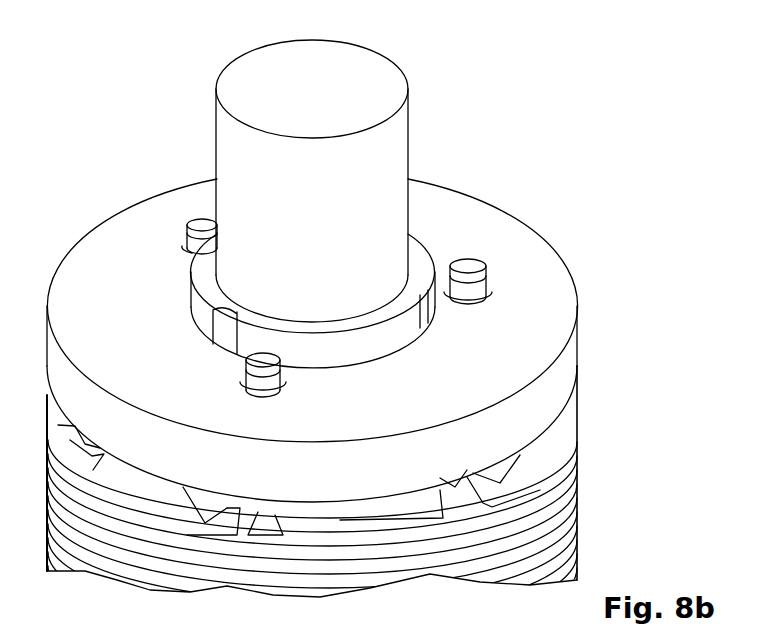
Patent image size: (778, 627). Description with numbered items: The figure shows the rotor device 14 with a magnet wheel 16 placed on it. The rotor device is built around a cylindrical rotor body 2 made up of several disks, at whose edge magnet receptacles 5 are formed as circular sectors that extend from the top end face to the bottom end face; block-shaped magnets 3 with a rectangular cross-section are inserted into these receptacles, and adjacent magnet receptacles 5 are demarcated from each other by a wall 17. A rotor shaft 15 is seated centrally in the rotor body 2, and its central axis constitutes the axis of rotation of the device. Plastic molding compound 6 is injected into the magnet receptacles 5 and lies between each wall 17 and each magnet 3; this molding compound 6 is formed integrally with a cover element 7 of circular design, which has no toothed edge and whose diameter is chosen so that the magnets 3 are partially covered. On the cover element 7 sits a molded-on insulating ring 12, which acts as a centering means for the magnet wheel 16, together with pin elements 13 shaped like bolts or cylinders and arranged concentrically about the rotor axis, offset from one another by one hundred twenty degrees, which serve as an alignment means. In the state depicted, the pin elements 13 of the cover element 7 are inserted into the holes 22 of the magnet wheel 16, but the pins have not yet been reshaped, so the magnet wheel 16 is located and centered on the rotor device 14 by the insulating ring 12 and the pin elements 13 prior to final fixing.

The rotor body 2 is at (572, 516).
The magnets 3 is at (342, 474).
The magnet receptacles 5 is at (372, 545).
The plastic molding compound 6 is at (585, 408).
The cover element 7 is at (308, 508).
The insulating ring 12 is at (205, 272).
The pin elements 13 is at (478, 265).
The rotor device 14 is at (598, 138).
The rotor shaft 15 is at (345, 181).
The magnet wheel 16 is at (484, 212).
The wall 17 is at (482, 500).
The holes 22 is at (490, 293).